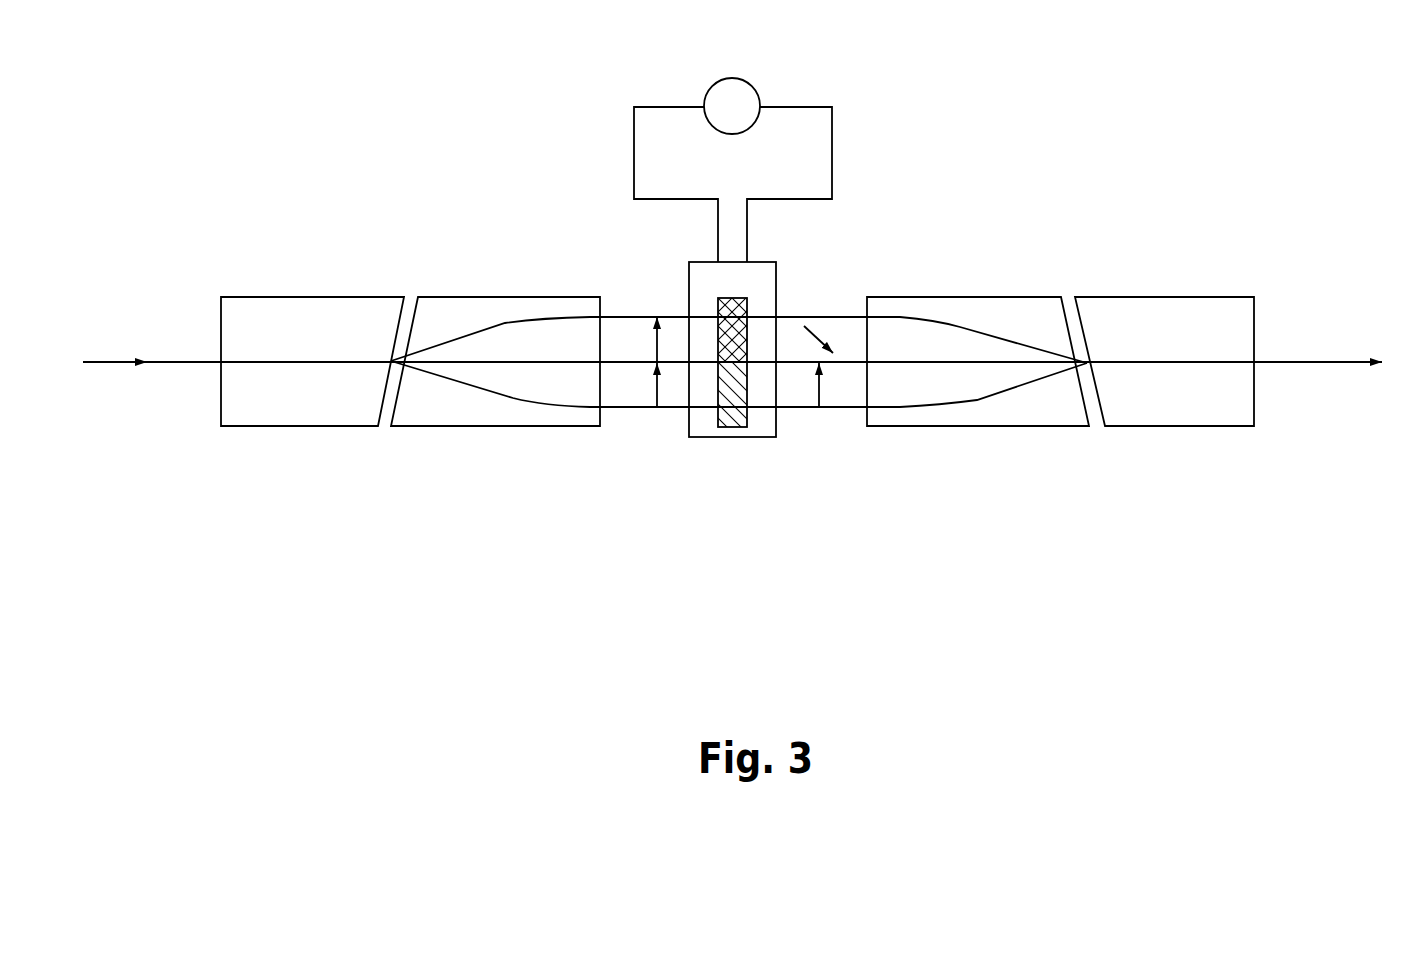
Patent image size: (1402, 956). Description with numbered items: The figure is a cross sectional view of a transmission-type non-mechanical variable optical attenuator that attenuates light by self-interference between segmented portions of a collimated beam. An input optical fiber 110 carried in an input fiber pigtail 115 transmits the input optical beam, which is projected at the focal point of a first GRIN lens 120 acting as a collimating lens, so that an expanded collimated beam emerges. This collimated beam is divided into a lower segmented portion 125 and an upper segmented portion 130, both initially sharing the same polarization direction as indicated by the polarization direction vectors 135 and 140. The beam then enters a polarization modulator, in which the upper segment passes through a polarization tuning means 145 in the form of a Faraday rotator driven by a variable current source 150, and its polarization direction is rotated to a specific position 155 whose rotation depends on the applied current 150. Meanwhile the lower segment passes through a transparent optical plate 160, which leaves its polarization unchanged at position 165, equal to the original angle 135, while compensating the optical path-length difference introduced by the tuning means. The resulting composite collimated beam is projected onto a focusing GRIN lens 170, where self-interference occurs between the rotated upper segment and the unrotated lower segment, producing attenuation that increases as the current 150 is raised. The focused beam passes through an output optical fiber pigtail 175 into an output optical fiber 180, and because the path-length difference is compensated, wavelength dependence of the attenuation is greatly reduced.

The optical fiber 110 is at (176, 365).
The input fiber pigtail 115 is at (331, 405).
The first GRIN lens 120 is at (439, 402).
The lower segmented portion 125 is at (619, 385).
The upper segmented portion 130 is at (618, 337).
The polarization direction vector 135 is at (655, 408).
The polarization direction vector 140 is at (652, 313).
The polarization tuning means 145 is at (718, 335).
The variable current source 150 is at (757, 82).
The rotated polarization position 155 is at (822, 330).
The transparent optical plate 160 is at (742, 424).
The polarization position 165 is at (819, 410).
The focusing GRIN lens 170 is at (1015, 408).
The output optical fiber pigtail 175 is at (1120, 408).
The output optical fiber 180 is at (1307, 367).